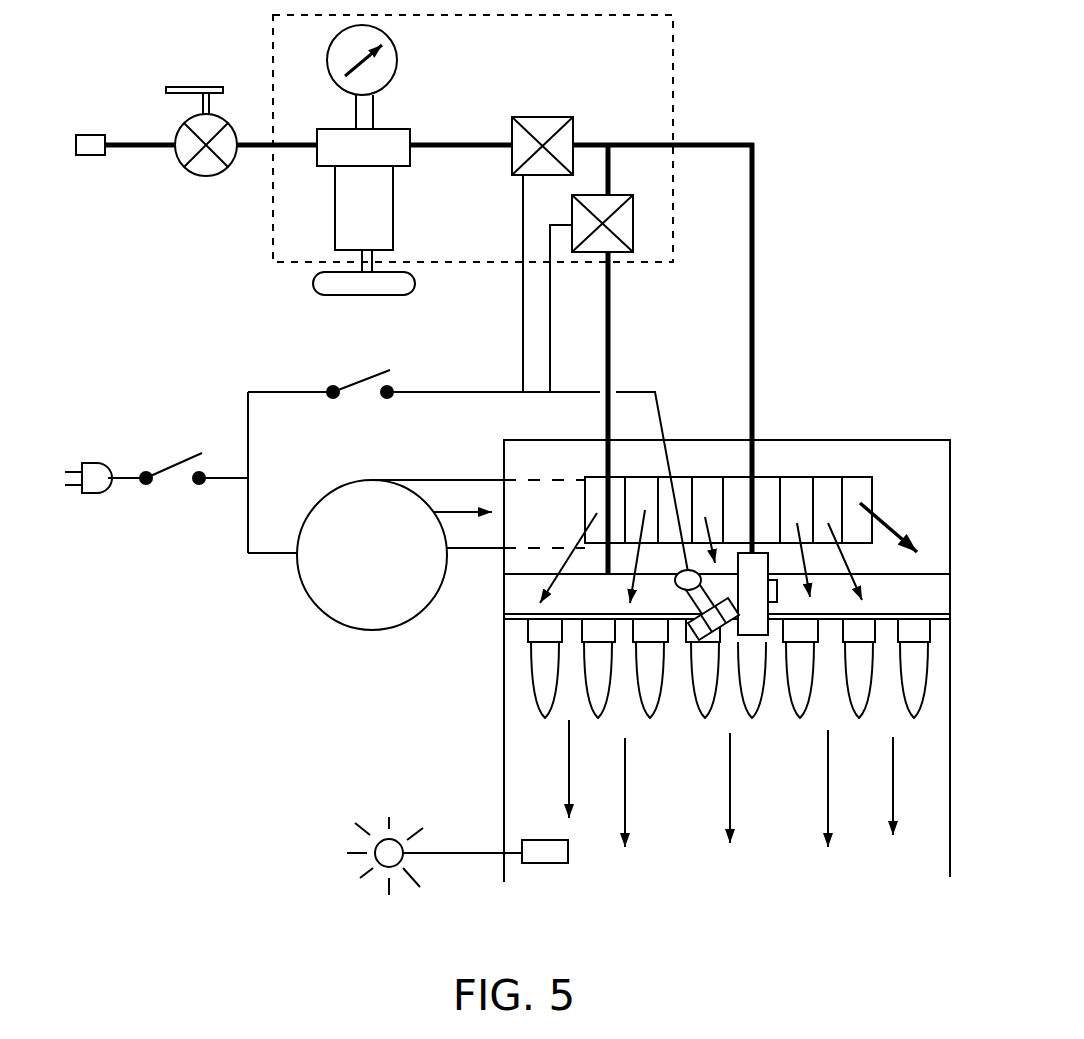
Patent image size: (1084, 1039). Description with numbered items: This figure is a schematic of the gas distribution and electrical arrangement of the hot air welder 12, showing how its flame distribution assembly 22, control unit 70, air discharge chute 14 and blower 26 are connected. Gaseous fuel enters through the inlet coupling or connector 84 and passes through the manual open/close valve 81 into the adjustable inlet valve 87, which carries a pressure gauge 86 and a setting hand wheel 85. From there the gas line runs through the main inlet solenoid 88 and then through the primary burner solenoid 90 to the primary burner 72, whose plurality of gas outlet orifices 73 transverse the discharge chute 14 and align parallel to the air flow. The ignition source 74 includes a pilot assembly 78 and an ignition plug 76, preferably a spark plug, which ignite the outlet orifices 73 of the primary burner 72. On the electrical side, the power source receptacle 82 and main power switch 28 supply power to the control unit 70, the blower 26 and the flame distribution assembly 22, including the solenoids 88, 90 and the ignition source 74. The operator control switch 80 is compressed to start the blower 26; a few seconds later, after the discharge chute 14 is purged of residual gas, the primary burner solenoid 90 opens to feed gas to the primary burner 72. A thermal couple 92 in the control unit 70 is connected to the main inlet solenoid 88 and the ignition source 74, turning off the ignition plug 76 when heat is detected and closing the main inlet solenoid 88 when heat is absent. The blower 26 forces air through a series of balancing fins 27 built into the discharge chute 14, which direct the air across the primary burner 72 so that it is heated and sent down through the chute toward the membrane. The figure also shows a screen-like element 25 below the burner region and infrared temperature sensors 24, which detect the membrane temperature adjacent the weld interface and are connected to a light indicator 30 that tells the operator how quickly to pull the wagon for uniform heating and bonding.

The hot air welder 12 is at (504, 738).
The air discharge chute 14 is at (534, 818).
The flame distribution assembly 22 is at (935, 587).
The infrared temperature sensors 24 is at (543, 863).
The screen 25 is at (503, 615).
The blower 26 is at (352, 570).
The balancing fins 27 is at (795, 477).
The main power switch 28 is at (150, 487).
The light indicator 30 is at (434, 816).
The control unit 70 is at (675, 62).
The primary burner 72 is at (517, 588).
The gas outlet orifices 73 is at (690, 668).
The ignition source 74 is at (665, 447).
The ignition plug 76 is at (697, 674).
The pilot assembly 78 is at (762, 674).
The operator control switch 80 is at (333, 400).
The manual open/close valve 81 is at (207, 87).
The electrical power source receptacle 82 is at (92, 462).
The gaseous fuel source inlet coupling 84 is at (94, 155).
The setting hand wheel 85 is at (330, 295).
The pressure gauge 86 is at (397, 60).
The adjustable inlet valve 87 is at (373, 205).
The main inlet solenoid 88 is at (552, 118).
The primary burner solenoid 90 is at (633, 225).
The thermal couple 92 is at (785, 494).